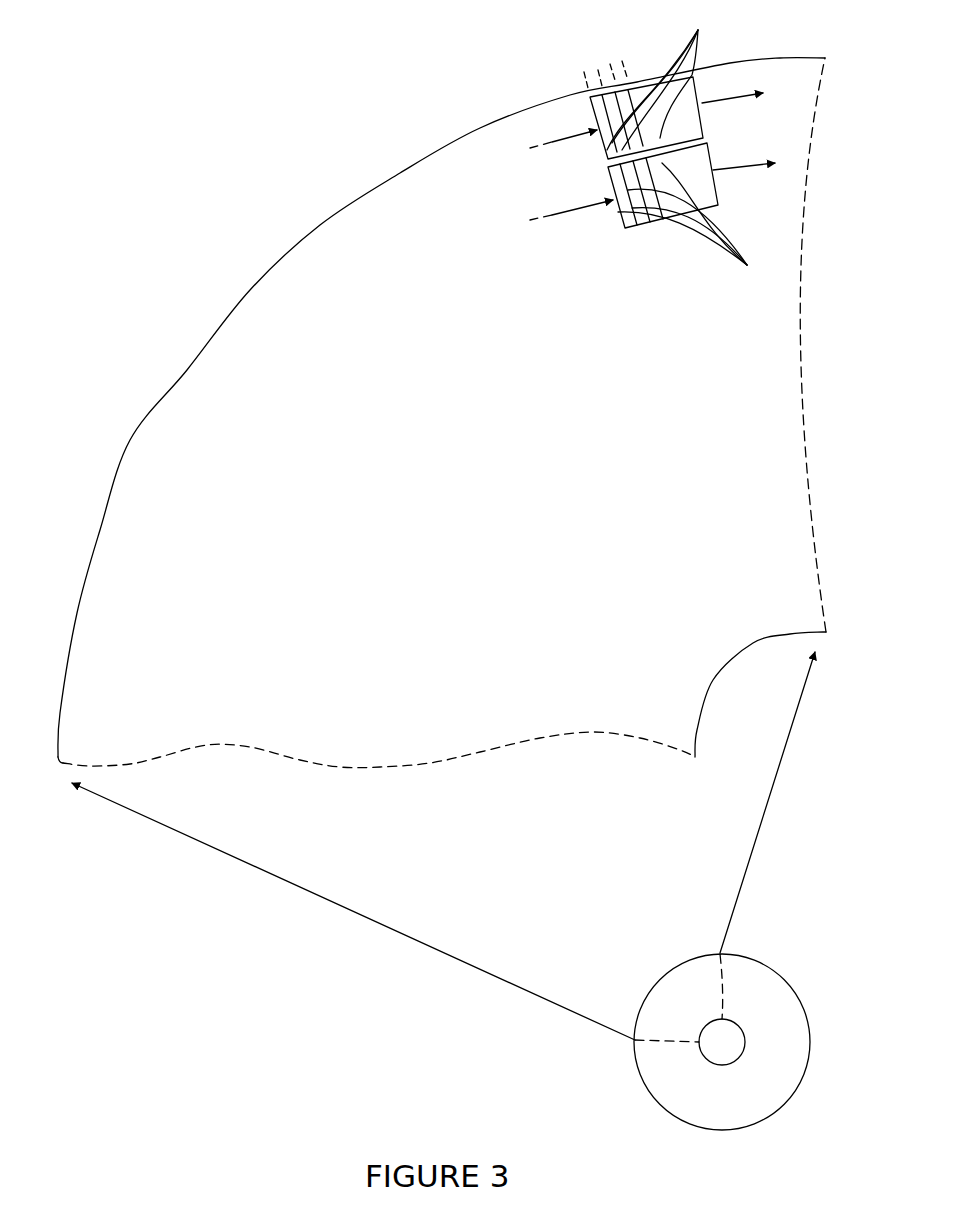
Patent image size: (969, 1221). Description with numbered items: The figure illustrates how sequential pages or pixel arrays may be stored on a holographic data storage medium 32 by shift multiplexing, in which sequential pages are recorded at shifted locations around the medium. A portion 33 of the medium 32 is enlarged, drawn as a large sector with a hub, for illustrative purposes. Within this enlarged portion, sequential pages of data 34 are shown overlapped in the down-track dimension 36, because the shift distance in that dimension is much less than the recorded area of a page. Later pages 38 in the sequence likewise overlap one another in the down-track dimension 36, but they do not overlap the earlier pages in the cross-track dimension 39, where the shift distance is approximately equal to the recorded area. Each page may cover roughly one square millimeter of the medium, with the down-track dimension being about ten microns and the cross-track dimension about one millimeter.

The medium 32 is at (663, 1093).
The portion of medium 33 is at (330, 277).
The sequential pages of data 34 is at (658, 78).
The down-track dimension 36 is at (586, 68).
The later pages 38 is at (693, 223).
The cross-track dimension 39 is at (530, 148).